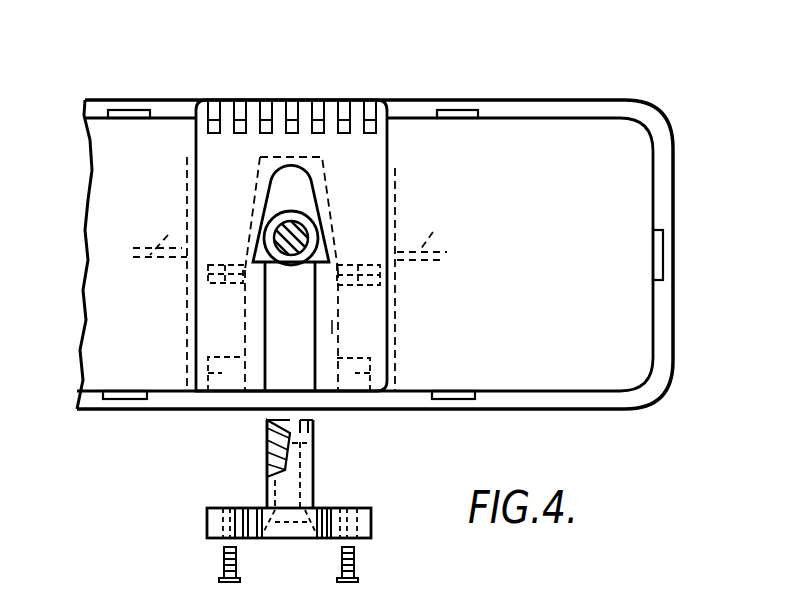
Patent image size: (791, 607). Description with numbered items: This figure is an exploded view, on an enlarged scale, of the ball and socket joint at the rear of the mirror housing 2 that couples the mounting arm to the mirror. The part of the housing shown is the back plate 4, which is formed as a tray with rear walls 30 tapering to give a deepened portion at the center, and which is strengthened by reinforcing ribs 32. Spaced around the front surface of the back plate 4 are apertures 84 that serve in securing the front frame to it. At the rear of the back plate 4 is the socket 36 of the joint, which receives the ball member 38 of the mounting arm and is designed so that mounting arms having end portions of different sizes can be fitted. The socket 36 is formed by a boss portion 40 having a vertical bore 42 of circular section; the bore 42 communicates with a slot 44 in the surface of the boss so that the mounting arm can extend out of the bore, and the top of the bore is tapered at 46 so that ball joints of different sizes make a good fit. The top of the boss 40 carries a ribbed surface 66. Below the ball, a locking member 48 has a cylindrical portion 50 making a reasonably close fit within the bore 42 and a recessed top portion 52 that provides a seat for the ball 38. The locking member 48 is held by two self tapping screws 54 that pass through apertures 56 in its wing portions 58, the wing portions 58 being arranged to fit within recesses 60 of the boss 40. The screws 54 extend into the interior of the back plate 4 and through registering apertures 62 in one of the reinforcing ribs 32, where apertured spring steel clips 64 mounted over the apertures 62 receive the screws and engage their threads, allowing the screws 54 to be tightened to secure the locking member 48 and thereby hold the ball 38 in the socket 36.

The housing 2 is at (572, 99).
The back plate part 4 is at (535, 142).
The rear walls 30 is at (157, 125).
The reinforcing ribs 32 is at (170, 232).
The socket 36 is at (326, 420).
The ball member 38 is at (291, 267).
The boss portion 40 is at (218, 157).
The vertical bore 42 is at (332, 327).
The slot 44 is at (273, 328).
The tapered top portion of bore 46 is at (322, 179).
The locking member 48 is at (258, 490).
The cylindrical portion 50 is at (312, 455).
The recessed top portion 52 is at (267, 432).
The self tapping screws 54 is at (218, 567).
The apertures 56 is at (218, 540).
The wing portions 58 is at (207, 517).
The recesses 60 is at (217, 373).
The registering apertures 62 is at (220, 265).
The spring steel clips 64 is at (358, 298).
The ribbed surface 66 is at (290, 113).
The apertures 84 is at (132, 110).